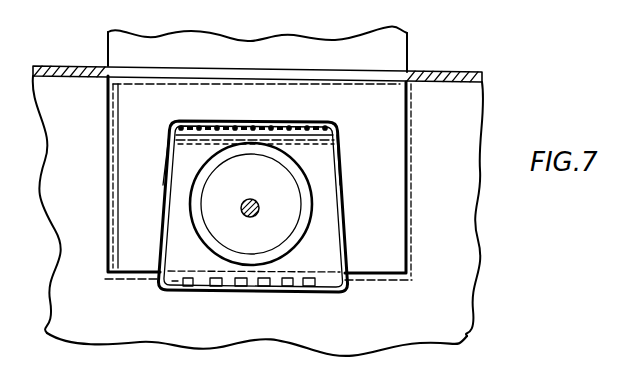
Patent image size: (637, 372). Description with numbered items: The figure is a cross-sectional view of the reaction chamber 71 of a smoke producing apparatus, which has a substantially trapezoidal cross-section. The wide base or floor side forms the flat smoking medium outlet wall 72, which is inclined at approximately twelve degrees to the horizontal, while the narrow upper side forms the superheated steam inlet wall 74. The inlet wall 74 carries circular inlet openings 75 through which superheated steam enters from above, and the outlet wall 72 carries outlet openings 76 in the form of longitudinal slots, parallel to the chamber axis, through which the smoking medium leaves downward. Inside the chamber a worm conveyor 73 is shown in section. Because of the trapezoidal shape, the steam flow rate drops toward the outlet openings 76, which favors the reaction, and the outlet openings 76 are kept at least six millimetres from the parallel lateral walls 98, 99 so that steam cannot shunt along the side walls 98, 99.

The reaction chamber 71 is at (348, 246).
The smoking medium outlet wall 72 is at (176, 285).
The worm conveyor 73 is at (290, 211).
The superheated steam inlet wall 74 is at (206, 121).
The inlet openings 75 is at (284, 123).
The outlet openings 76 is at (305, 292).
The lateral wall 98 is at (341, 176).
The lateral wall 99 is at (166, 172).